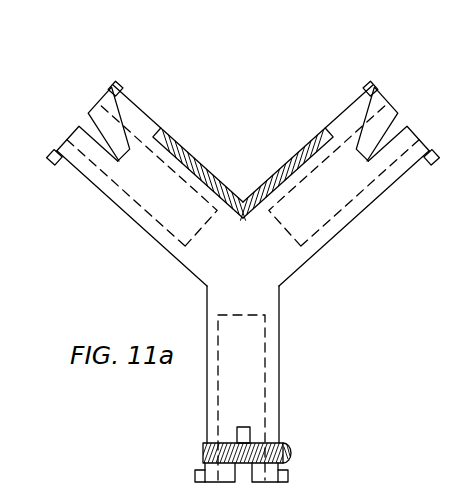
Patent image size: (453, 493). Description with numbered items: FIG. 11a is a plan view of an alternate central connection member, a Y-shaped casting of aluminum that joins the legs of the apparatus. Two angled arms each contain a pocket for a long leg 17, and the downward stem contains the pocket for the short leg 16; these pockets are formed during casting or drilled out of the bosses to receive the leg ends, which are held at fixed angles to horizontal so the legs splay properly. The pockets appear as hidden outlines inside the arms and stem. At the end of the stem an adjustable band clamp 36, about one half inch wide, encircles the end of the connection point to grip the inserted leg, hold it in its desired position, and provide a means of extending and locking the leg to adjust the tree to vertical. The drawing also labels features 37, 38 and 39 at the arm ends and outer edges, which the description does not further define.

The short leg pocket 16 is at (252, 389).
The long leg pocket 17 is at (136, 186).
The adjustable band clamp 36 is at (295, 454).
The tab 37 is at (121, 91).
The flange 38 is at (84, 124).
The arm 39 is at (167, 256).